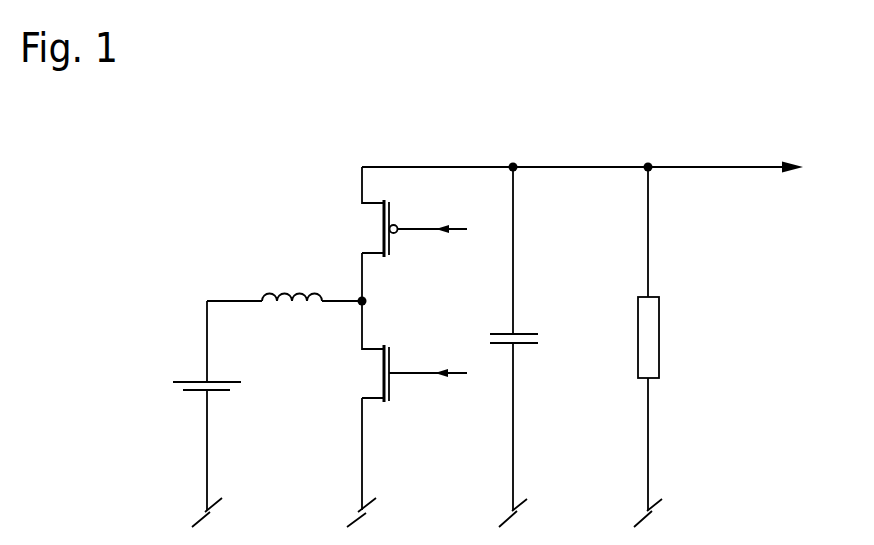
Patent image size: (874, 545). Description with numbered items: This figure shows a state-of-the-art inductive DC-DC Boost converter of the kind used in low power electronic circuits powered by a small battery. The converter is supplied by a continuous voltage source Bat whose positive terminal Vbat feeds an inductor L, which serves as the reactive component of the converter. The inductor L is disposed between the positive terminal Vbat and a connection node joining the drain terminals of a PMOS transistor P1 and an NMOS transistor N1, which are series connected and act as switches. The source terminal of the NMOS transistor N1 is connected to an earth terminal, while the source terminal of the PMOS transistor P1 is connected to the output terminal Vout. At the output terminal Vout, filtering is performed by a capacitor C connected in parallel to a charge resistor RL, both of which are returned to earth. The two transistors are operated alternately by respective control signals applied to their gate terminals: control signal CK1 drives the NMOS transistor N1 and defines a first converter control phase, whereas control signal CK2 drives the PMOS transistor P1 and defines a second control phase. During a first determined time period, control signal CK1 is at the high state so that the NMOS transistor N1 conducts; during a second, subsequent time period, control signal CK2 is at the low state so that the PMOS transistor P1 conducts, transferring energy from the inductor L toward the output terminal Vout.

The continuous voltage source Bat is at (199, 454).
The positive terminal Vbat is at (231, 323).
The inductor L is at (284, 281).
The PMOS transistor P1 is at (370, 234).
The NMOS transistor N1 is at (366, 405).
The control signal CK1 is at (428, 360).
The control signal CK2 is at (433, 216).
The capacitor C is at (516, 347).
The charge resistor RL is at (670, 347).
The output terminal Vout is at (605, 152).